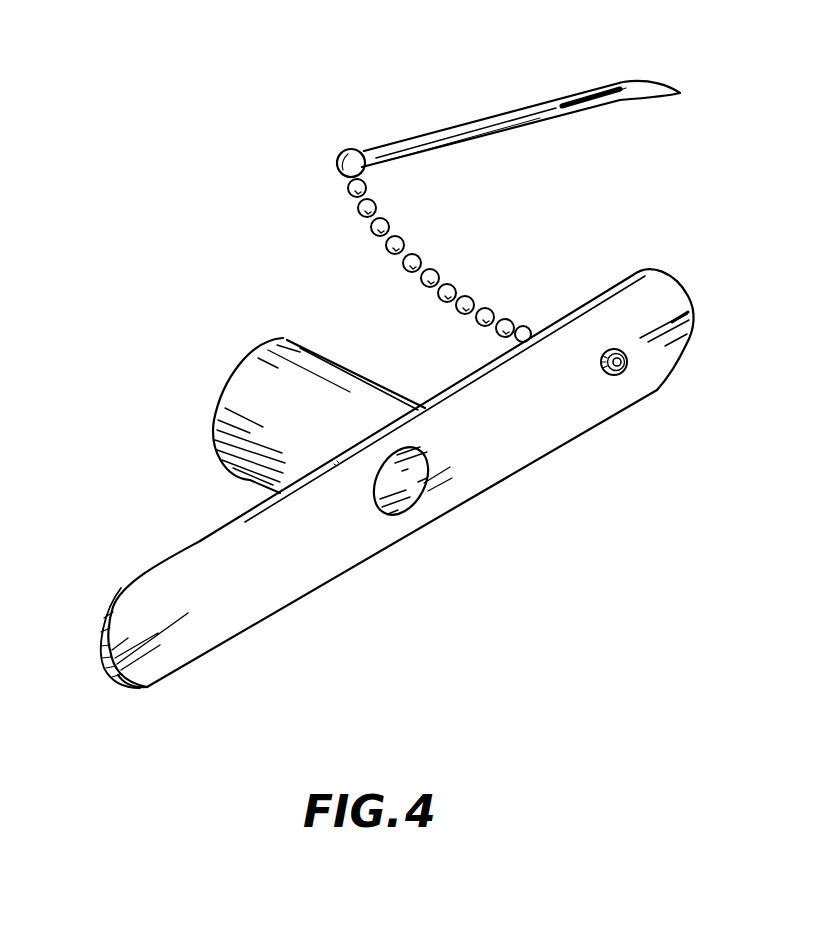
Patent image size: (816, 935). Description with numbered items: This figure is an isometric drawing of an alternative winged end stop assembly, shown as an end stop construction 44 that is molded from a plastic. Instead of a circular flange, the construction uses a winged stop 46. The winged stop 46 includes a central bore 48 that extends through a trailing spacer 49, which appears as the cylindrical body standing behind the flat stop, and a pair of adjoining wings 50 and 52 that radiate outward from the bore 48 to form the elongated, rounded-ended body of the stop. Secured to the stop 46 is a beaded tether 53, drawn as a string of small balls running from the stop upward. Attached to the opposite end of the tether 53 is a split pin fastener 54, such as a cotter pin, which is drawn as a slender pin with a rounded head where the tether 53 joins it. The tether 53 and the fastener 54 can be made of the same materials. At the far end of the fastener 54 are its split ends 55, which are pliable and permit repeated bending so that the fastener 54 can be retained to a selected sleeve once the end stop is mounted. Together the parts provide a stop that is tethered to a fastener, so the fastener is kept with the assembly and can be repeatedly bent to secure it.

The end stop construction 44 is at (678, 45).
The winged stop 46 is at (127, 582).
The central bore 48 is at (418, 491).
The trailing spacer 49 is at (217, 406).
The wing 50 is at (128, 689).
The wing 52 is at (686, 350).
The beaded tether 53 is at (422, 258).
The split pin fastener 54 is at (512, 108).
The split ends 55 is at (639, 93).